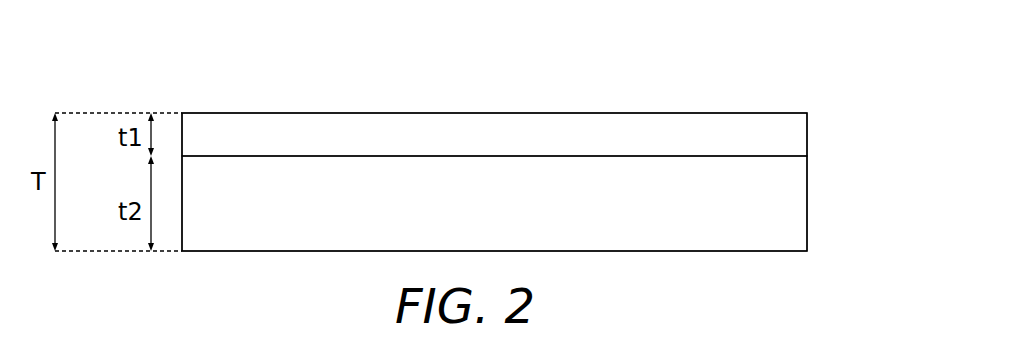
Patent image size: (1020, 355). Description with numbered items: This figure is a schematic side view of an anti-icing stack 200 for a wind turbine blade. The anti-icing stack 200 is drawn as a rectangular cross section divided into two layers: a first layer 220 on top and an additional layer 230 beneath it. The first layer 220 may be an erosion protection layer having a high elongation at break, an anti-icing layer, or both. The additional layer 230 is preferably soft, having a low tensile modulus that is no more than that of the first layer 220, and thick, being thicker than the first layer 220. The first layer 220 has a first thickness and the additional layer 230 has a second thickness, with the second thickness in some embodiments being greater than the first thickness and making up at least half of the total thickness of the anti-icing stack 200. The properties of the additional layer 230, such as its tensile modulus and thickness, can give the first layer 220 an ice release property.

The anti-icing stack 200 is at (162, 47).
The first layer 220 is at (785, 134).
The additional layer 230 is at (785, 211).